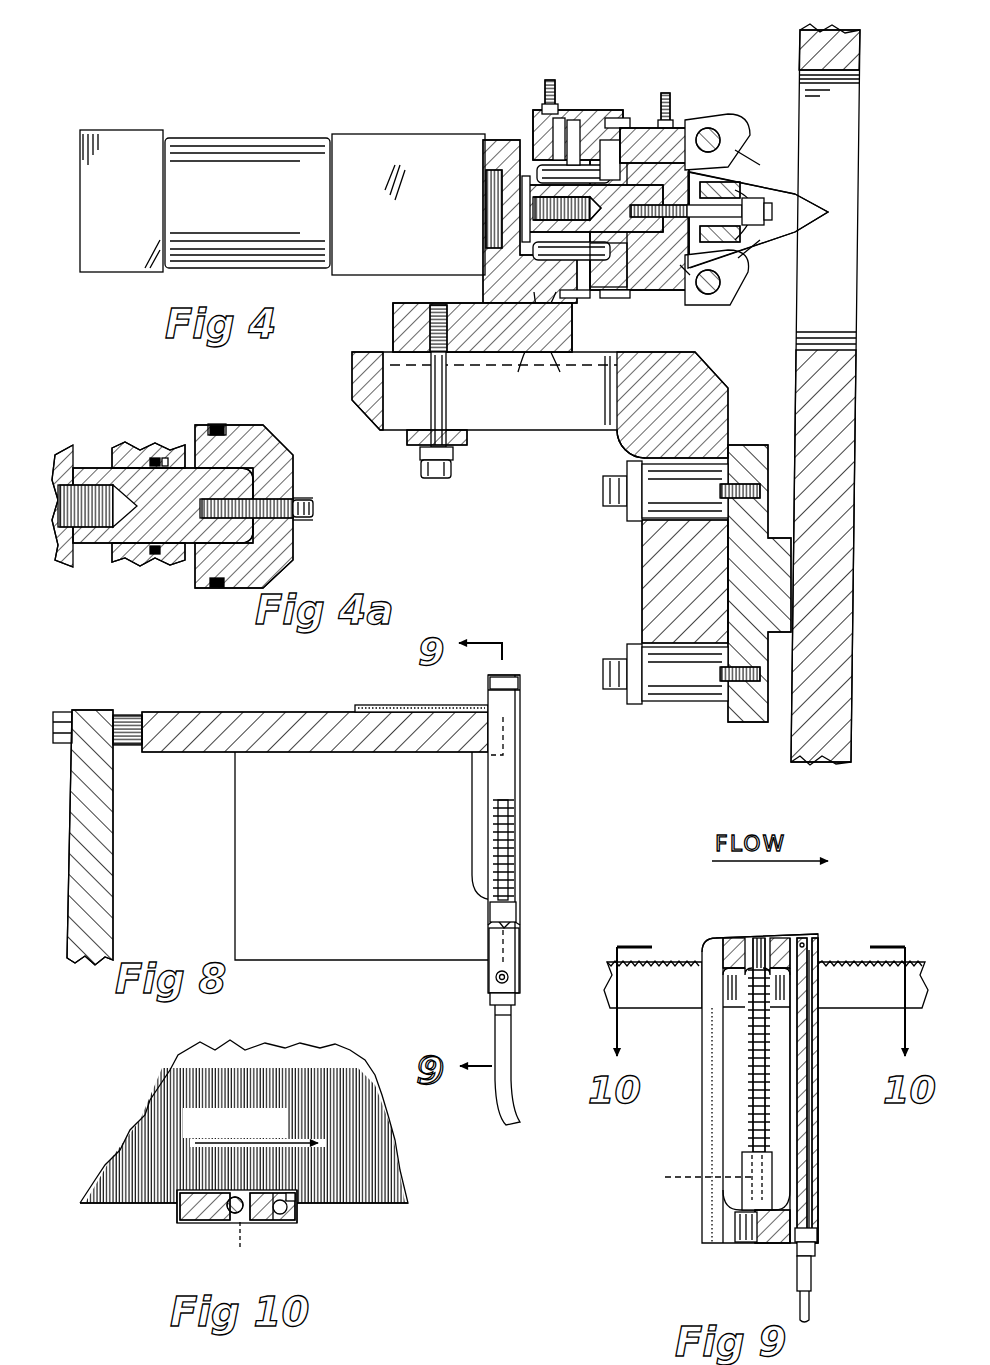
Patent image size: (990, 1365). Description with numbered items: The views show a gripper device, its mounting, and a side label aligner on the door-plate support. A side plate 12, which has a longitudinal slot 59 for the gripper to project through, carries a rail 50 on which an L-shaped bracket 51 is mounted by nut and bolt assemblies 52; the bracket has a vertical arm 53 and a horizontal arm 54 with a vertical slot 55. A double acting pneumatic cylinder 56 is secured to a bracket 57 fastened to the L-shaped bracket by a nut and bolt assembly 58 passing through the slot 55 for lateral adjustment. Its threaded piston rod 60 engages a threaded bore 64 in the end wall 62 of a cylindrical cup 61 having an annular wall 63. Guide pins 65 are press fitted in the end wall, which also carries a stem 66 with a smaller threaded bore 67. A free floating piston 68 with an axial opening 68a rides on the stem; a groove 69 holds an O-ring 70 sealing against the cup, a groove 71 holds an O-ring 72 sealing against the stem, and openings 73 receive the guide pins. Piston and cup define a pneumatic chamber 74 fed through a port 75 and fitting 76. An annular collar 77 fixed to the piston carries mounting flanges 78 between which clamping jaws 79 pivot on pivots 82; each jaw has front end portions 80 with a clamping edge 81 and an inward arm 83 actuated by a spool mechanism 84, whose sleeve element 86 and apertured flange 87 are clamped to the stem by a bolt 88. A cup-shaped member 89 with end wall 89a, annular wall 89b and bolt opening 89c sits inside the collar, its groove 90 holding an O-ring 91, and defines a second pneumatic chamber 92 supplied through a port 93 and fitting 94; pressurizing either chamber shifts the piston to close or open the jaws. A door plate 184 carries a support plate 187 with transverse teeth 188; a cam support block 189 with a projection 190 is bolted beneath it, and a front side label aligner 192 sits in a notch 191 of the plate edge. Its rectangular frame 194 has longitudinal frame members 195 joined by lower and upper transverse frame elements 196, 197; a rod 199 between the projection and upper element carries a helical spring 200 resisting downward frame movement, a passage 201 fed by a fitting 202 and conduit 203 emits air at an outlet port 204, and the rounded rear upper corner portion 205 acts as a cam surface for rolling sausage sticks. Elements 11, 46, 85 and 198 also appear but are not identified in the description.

In FIG. 4, the vessel wall 11 is at (878, 66).
In FIG. 4, the side plate 12 is at (856, 395).
In FIG. 4, the probe assembly 46 is at (503, 90).
In FIG. 4, the rail 50 is at (747, 446).
In FIG. 4, the L-shaped bracket 51 is at (630, 548).
In FIG. 4, the nut and bolt assemblies 52 is at (603, 498).
In FIG. 4, the vertical arm 53 is at (642, 588).
In FIG. 4, the horizontal arm 54 is at (352, 393).
In FIG. 4, the vertical slot 55 is at (615, 420).
In FIG. 4, the pneumatic cylinder 56 is at (215, 138).
In FIG. 4, the bracket 57 is at (393, 319).
In FIG. 4, the nut and bolt assembly 58 is at (437, 470).
In FIG. 4, the slot 59 is at (860, 336).
In FIG. 4, the piston rod 60 is at (530, 200).
In FIG. 4A, the piston rod 60 is at (102, 532).
In FIG. 4, the cylindrically shaped cup 61 is at (628, 100).
In FIG. 4, the end wall 62 is at (525, 275).
In FIG. 4A, the end wall 62 is at (73, 452).
In FIG. 4, the annular wall 63 is at (578, 143).
In FIG. 4, the threaded bore 64 is at (530, 216).
In FIG. 4A, the threaded bore 64 is at (63, 512).
In FIG. 4, the guide pins 65 is at (540, 165).
In FIG. 4A, the stem 66 is at (115, 455).
In FIG. 4A, the threaded axial bore 67 is at (225, 520).
In FIG. 4, the free floating piston 68 is at (590, 300).
In FIG. 4A, the free floating piston 68 is at (142, 566).
In FIG. 4, the axial opening 68a is at (550, 187).
In FIG. 4, the annular groove 69 is at (622, 128).
In FIG. 4, the O-ring 70 is at (610, 128).
In FIG. 4, the groove 71 is at (528, 346).
In FIG. 4A, the groove 71 is at (153, 456).
In FIG. 4, the O-ring 72 is at (556, 346).
In FIG. 4A, the O-ring 72 is at (162, 455).
In FIG. 4, the openings 73 is at (576, 157).
In FIG. 4, the pneumatic chamber 74 is at (572, 118).
In FIG. 4, the port 75 is at (550, 118).
In FIG. 4, the fitting 76 is at (549, 78).
In FIG. 4, the annular collar 77 is at (683, 268).
In FIG. 4, the mounting flanges 78 is at (737, 148).
In FIG. 4, the clamping jaws 79 is at (812, 145).
In FIG. 4, the front end portions 80 is at (822, 195).
In FIG. 4, the clamping edge 81 is at (833, 213).
In FIG. 4, the pivots 82 is at (710, 138).
In FIG. 4, the inwardly projecting arm 83 is at (737, 193).
In FIG. 4, the spool mechanism 84 is at (788, 145).
In FIG. 4, the upper seal 85 is at (742, 184).
In FIG. 4, the sleeve element 86 is at (745, 238).
In FIG. 4, the apertured flange 87 is at (730, 263).
In FIG. 4, the bolt 88 is at (757, 212).
In FIG. 4A, the bolt 88 is at (317, 512).
In FIG. 4, the cup-shaped member 89 is at (660, 262).
In FIG. 4A, the cup-shaped member 89 is at (281, 416).
In FIG. 4A, the end wall 89a is at (297, 545).
In FIG. 4A, the annular wall 89b is at (243, 588).
In FIG. 4A, the opening 89c is at (295, 500).
In FIG. 4A, the annular groove 90 is at (224, 426).
In FIG. 4A, the O-ring 91 is at (217, 424).
In FIG. 4, the pneumatic chamber 92 is at (595, 298).
In FIG. 4, the port 93 is at (665, 145).
In FIG. 4, the fitting 94 is at (665, 92).
In FIG. 8, the door plate 184 is at (95, 709).
In FIG. 8, the support plate 187 is at (197, 705).
In FIG. 9, the support plate 187 is at (607, 1020).
In FIG. 10, the support plate 187 is at (313, 1045).
In FIG. 8, the transverse teeth 188 is at (387, 687).
In FIG. 9, the transverse teeth 188 is at (857, 960).
In FIG. 10, the transverse teeth 188 is at (113, 1196).
In FIG. 8, the cam support block 189 is at (232, 862).
In FIG. 9, the cam support block 189 is at (738, 1122).
In FIG. 8, the rectangular projection 190 is at (513, 907).
In FIG. 9, the rectangular projection 190 is at (747, 1158).
In FIG. 10, the rectangular projection 190 is at (245, 1248).
In FIG. 9, the notches 191 is at (706, 997).
In FIG. 10, the notches 191 is at (297, 1200).
In FIG. 8, the front side label aligner 192 is at (548, 782).
In FIG. 9, the front side label aligner 192 is at (673, 1190).
In FIG. 10, the front side label aligner 192 is at (168, 1238).
In FIG. 8, the rectangular frame 194 is at (518, 958).
In FIG. 9, the rectangular frame 194 is at (696, 1212).
In FIG. 10, the rectangular frame 194 is at (176, 1221).
In FIG. 8, the longitudinal frame members 195 is at (508, 778).
In FIG. 9, the longitudinal frame members 195 is at (700, 1052).
In FIG. 10, the longitudinal frame members 195 is at (177, 1213).
In FIG. 9, the lower transverse frame element 196 is at (733, 1243).
In FIG. 8, the upper transverse frame element 197 is at (507, 674).
In FIG. 9, the upper transverse frame element 197 is at (740, 940).
In FIG. 9, the axis 198 is at (686, 1179).
In FIG. 8, the rod 199 is at (513, 822).
In FIG. 9, the rod 199 is at (760, 938).
In FIG. 10, the rod 199 is at (233, 1212).
In FIG. 8, the helical spring 200 is at (513, 848).
In FIG. 9, the helical spring 200 is at (747, 1095).
In FIG. 9, the passage 201 is at (810, 1168).
In FIG. 10, the passage 201 is at (281, 1214).
In FIG. 8, the fitting 202 is at (490, 997).
In FIG. 9, the fitting 202 is at (817, 1247).
In FIG. 8, the conduit 203 is at (512, 1122).
In FIG. 9, the conduit 203 is at (807, 1307).
In FIG. 9, the outlet port 204 is at (795, 940).
In FIG. 10, the outlet port 204 is at (273, 1214).
In FIG. 8, the rear upper corner portion 205 is at (500, 683).
In FIG. 9, the rear upper corner portion 205 is at (703, 943).